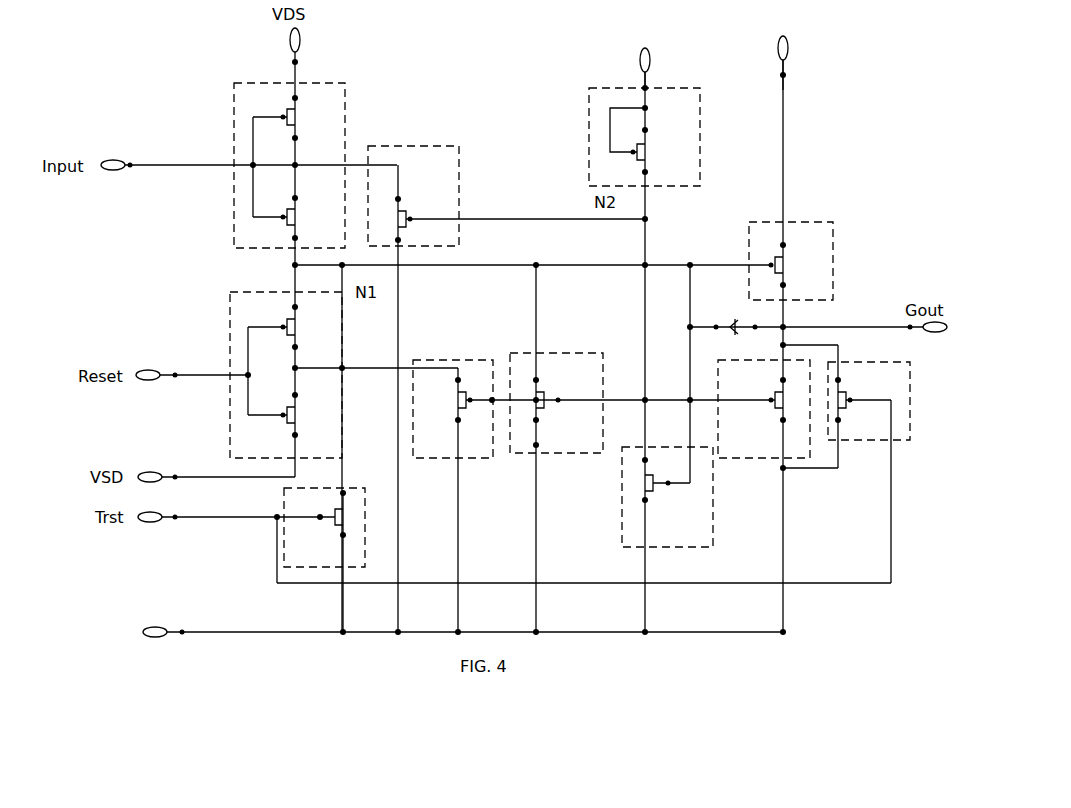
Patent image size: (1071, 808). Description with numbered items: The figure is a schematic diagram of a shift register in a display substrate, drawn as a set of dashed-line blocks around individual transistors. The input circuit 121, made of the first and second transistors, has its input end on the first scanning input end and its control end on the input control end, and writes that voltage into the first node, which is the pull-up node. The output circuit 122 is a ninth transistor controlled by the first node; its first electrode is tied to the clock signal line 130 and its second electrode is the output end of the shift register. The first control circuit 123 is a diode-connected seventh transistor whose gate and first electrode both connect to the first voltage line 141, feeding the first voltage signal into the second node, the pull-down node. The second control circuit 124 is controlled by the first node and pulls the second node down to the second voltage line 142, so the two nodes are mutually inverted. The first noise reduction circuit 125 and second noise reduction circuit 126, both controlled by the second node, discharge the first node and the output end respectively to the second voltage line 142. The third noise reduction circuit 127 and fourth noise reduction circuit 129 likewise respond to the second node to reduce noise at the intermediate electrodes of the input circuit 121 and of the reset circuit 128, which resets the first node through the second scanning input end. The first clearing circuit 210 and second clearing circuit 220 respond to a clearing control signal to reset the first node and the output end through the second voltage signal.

The input circuit 121 is at (345, 113).
The third noise reduction circuit 127 is at (460, 168).
The first control circuit 123 is at (700, 115).
The output circuit 122 is at (833, 237).
The reset circuit 128 is at (230, 322).
The first clearing circuit 210 is at (358, 486).
The fourth noise reduction circuit 129 is at (470, 460).
The first noise reduction circuit 125 is at (552, 455).
The second control circuit 124 is at (713, 513).
The second noise reduction circuit 126 is at (760, 458).
The second clearing circuit 220 is at (910, 440).
The first voltage line 141 is at (645, 59).
The clock signal line 130 is at (783, 51).
The second voltage line 142 is at (439, 634).